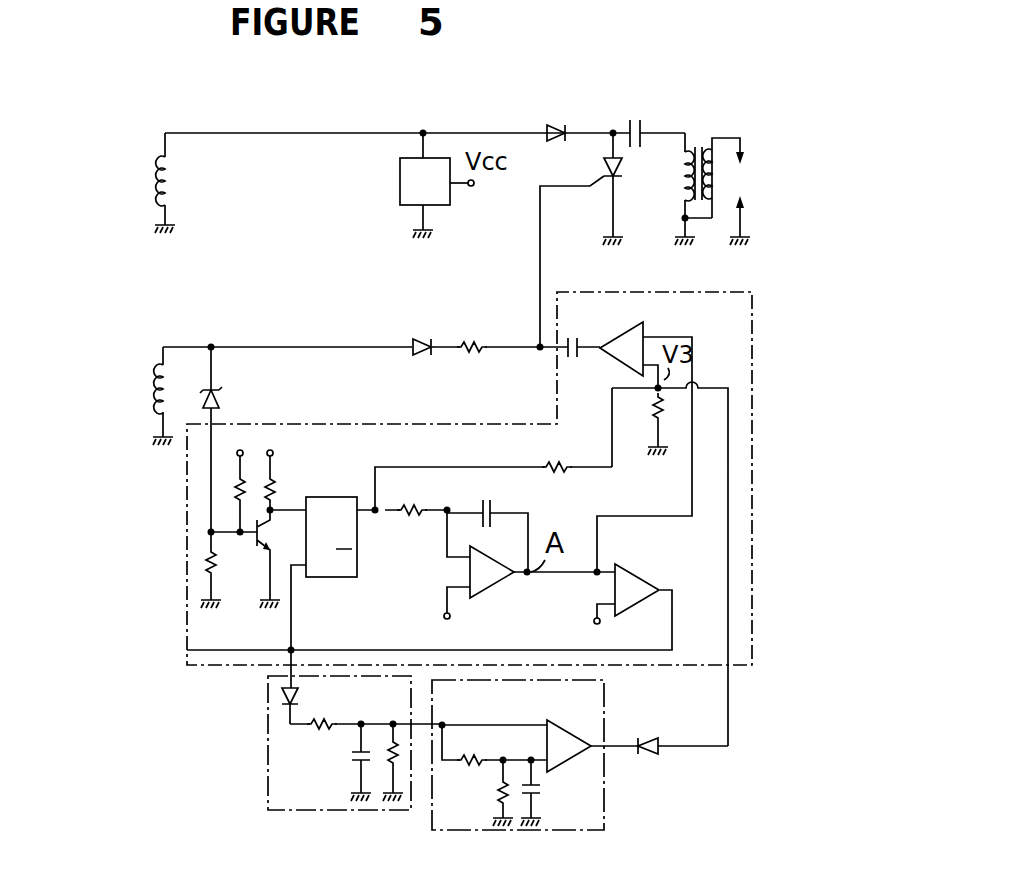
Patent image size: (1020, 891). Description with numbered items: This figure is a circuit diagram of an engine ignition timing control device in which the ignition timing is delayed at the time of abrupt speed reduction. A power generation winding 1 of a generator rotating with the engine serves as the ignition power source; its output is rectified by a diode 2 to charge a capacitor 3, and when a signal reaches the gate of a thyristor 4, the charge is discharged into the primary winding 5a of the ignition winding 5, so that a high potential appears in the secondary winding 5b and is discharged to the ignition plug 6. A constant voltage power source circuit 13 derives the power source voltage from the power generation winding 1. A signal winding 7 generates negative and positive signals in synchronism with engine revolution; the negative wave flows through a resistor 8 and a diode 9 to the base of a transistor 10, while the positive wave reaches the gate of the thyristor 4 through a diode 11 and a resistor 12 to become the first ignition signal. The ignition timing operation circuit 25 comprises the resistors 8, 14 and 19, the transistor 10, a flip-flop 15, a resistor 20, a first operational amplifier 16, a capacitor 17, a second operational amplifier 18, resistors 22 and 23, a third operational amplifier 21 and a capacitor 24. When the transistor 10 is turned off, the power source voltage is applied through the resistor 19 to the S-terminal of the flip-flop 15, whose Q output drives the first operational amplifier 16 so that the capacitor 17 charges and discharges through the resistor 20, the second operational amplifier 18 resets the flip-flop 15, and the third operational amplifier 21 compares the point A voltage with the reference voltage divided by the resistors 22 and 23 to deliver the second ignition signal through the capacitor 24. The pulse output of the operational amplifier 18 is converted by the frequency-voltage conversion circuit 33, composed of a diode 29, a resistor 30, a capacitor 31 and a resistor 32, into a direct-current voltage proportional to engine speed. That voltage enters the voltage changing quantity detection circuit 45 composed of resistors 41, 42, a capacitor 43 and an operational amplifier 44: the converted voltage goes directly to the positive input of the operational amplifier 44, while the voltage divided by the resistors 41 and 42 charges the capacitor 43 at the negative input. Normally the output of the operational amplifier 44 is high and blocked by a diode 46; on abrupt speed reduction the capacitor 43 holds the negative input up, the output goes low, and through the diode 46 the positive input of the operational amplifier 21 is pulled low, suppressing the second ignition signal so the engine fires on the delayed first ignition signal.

The power generation winding 1 is at (160, 180).
The diode 2 is at (553, 128).
The capacitor 3 is at (633, 118).
The thyristor 4 is at (600, 168).
The ignition winding 5 is at (694, 158).
The primary winding 5a is at (683, 170).
The secondary winding 5b is at (716, 178).
The ignition plug 6 is at (740, 187).
The signal winding 7 is at (158, 393).
The resistor 8 is at (206, 568).
The diode 9 is at (220, 396).
The transistor 10 is at (262, 550).
The diode 11 is at (418, 340).
The resistor 12 is at (468, 340).
The constant voltage power source circuit 13 is at (400, 180).
The resistor 14 is at (235, 490).
The flip-flop 15 is at (325, 497).
The first operational amplifier 16 is at (495, 566).
The capacitor 17 is at (487, 496).
The second operational amplifier 18 is at (640, 580).
The resistor 19 is at (276, 490).
The resistor 20 is at (406, 506).
The third operational amplifier 21 is at (645, 328).
The resistor 22 is at (556, 472).
The resistor 23 is at (650, 404).
The capacitor 24 is at (576, 336).
The ignition timing operation circuit 25 is at (688, 292).
The diode 29 is at (298, 696).
The resistor 30 is at (318, 732).
The capacitor 31 is at (350, 765).
The resistor 32 is at (392, 740).
The frequency-voltage conversion circuit 33 is at (268, 786).
The resistor 41 is at (476, 752).
The resistor 42 is at (500, 796).
The capacitor 43 is at (540, 790).
The operational amplifier 44 is at (566, 714).
The voltage changing quantity detection circuit 45 is at (618, 810).
The diode 46 is at (650, 756).